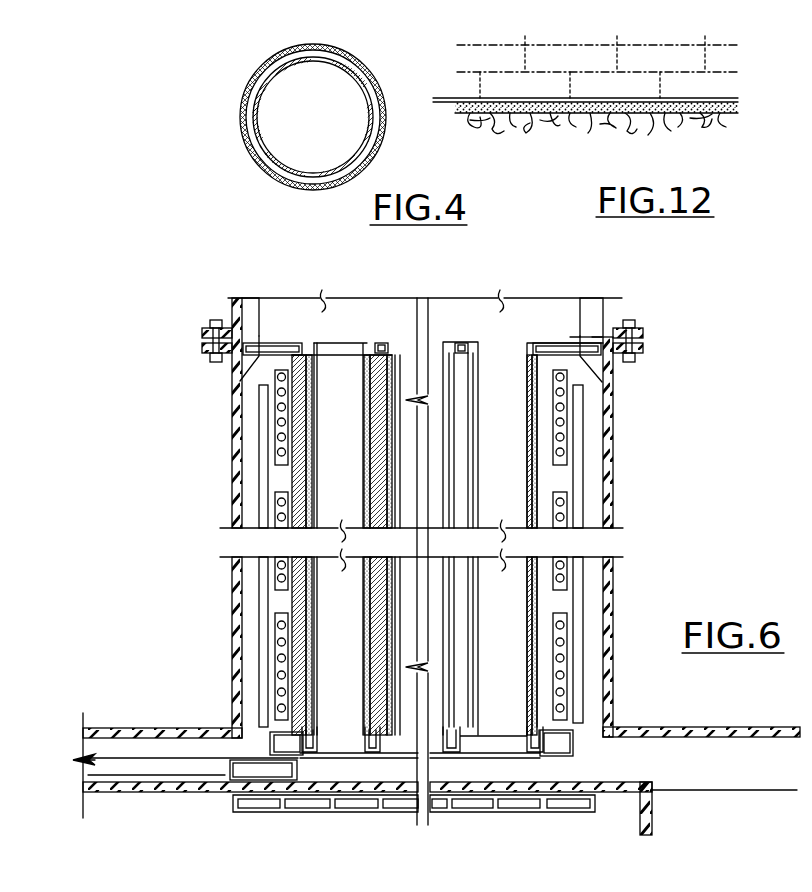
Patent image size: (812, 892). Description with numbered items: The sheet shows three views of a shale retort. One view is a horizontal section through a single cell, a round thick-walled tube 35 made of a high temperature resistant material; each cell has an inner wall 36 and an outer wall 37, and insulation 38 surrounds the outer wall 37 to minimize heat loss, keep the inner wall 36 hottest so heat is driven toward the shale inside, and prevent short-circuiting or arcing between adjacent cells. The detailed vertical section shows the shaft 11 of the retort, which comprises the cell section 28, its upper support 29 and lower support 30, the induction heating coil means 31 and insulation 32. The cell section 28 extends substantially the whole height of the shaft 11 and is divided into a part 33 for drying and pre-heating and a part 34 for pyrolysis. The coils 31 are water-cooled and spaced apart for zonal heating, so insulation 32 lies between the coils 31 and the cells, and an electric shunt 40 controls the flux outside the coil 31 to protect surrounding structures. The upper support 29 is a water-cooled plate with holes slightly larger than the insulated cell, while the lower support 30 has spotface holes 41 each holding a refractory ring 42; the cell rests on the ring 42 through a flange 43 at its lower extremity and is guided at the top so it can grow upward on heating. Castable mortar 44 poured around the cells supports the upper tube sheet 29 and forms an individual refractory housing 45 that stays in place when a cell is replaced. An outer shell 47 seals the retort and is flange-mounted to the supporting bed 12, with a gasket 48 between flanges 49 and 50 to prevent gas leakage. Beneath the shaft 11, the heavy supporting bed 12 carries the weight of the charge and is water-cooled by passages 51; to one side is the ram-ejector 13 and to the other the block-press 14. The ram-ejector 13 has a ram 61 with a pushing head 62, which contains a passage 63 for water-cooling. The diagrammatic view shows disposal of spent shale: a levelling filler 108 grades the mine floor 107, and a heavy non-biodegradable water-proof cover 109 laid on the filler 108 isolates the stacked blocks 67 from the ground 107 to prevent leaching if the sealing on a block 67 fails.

In FIG. 4, the tube 35 is at (296, 48).
In FIG. 6, the tube 35 is at (346, 431).
In FIG. 4, the inner wall 36 is at (308, 92).
In FIG. 6, the inner wall 36 is at (302, 457).
In FIG. 4, the outer wall 37 is at (346, 52).
In FIG. 6, the outer wall 37 is at (310, 479).
In FIG. 4, the insulation 38 is at (367, 68).
In FIG. 6, the insulation 38 is at (314, 495).
In FIG. 12, the blocks 67 is at (598, 67).
In FIG. 12, the mine floor 107 is at (634, 113).
In FIG. 12, the levelling filler 108 is at (652, 114).
In FIG. 12, the water-proof cover 109 is at (673, 112).
In FIG. 6, the shaft 11 is at (502, 688).
In FIG. 6, the supporting bed 12 is at (474, 812).
In FIG. 6, the ram-ejector 13 is at (103, 752).
In FIG. 6, the block-press 14 is at (717, 785).
In FIG. 6, the cell section 28 is at (513, 508).
In FIG. 6, the upper support 29 is at (295, 341).
In FIG. 6, the lower support 30 is at (270, 733).
In FIG. 6, the induction heating coil means 31 is at (277, 430).
In FIG. 6, the insulation 32 is at (537, 412).
In FIG. 6, the drying and pre-heating part 33 is at (507, 357).
In FIG. 6, the pyrolysis part 34 is at (508, 474).
In FIG. 6, the electric shunt 40 is at (262, 443).
In FIG. 6, the spotface hole 41 is at (358, 756).
In FIG. 6, the refractory ring 42 is at (348, 724).
In FIG. 6, the flange 43 is at (352, 704).
In FIG. 6, the castable mortar 44 is at (374, 343).
In FIG. 6, the refractory housing 45 is at (383, 389).
In FIG. 6, the outer shell 47 is at (232, 392).
In FIG. 6, the gasket 48 is at (202, 339).
In FIG. 6, the flange 49 is at (202, 350).
In FIG. 6, the flange 50 is at (206, 328).
In FIG. 6, the passages 51 is at (348, 808).
In FIG. 6, the ram 61 is at (167, 768).
In FIG. 6, the pushing head 62 is at (298, 770).
In FIG. 6, the passage 63 is at (243, 773).